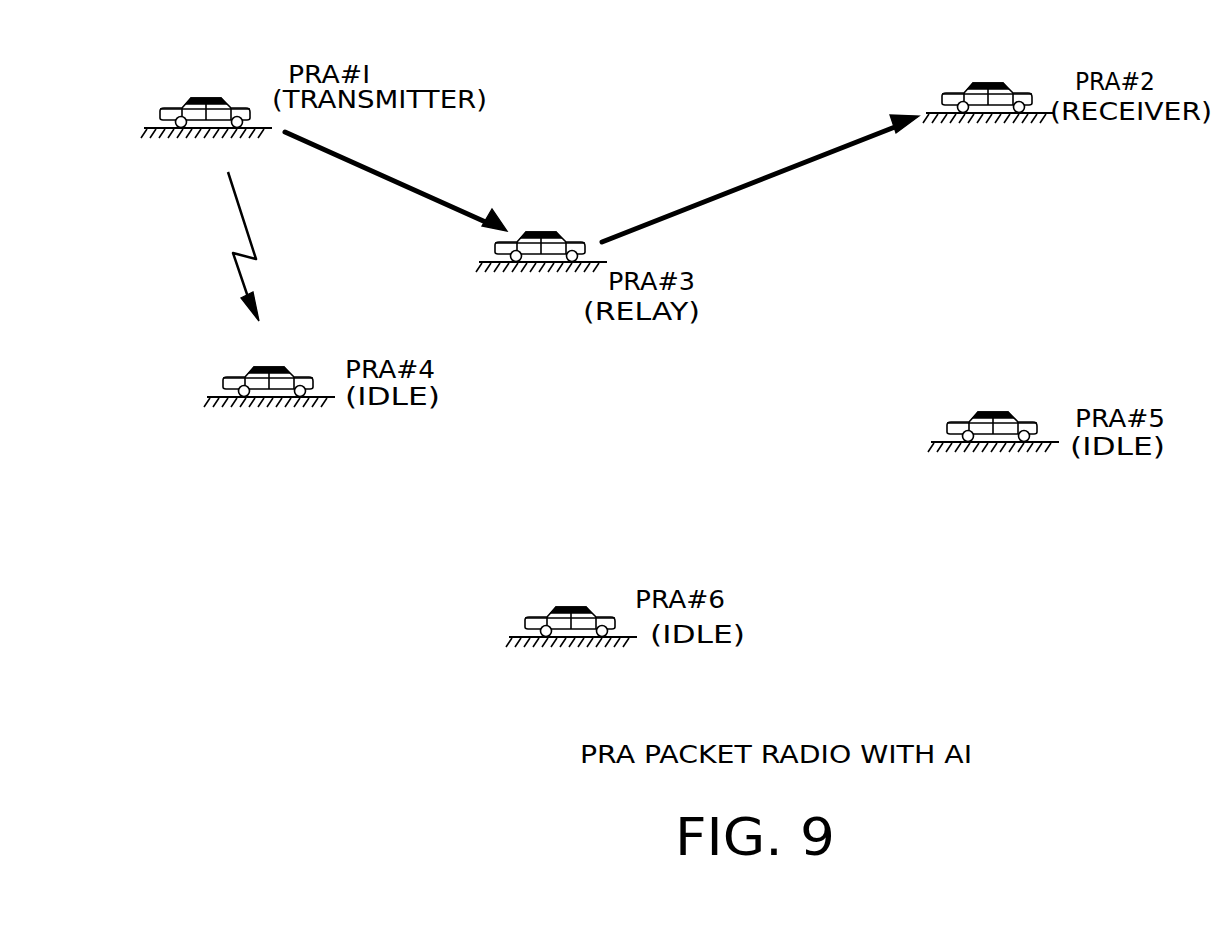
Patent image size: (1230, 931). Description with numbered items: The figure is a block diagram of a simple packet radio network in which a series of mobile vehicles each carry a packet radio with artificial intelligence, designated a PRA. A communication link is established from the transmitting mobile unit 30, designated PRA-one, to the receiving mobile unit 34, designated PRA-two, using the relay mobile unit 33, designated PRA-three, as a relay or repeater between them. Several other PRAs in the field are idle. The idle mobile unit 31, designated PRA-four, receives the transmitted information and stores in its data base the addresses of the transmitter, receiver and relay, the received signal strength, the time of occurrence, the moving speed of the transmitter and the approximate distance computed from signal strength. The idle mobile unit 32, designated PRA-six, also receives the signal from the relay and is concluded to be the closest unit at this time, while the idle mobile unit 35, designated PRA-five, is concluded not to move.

The mobile unit PRA-1 30 is at (205, 97).
The mobile unit PRA-4 31 is at (262, 370).
The mobile unit PRA-6 32 is at (570, 606).
The mobile unit PRA-3 33 is at (531, 236).
The mobile unit PRA-2 34 is at (985, 84).
The mobile unit PRA-5 35 is at (989, 413).